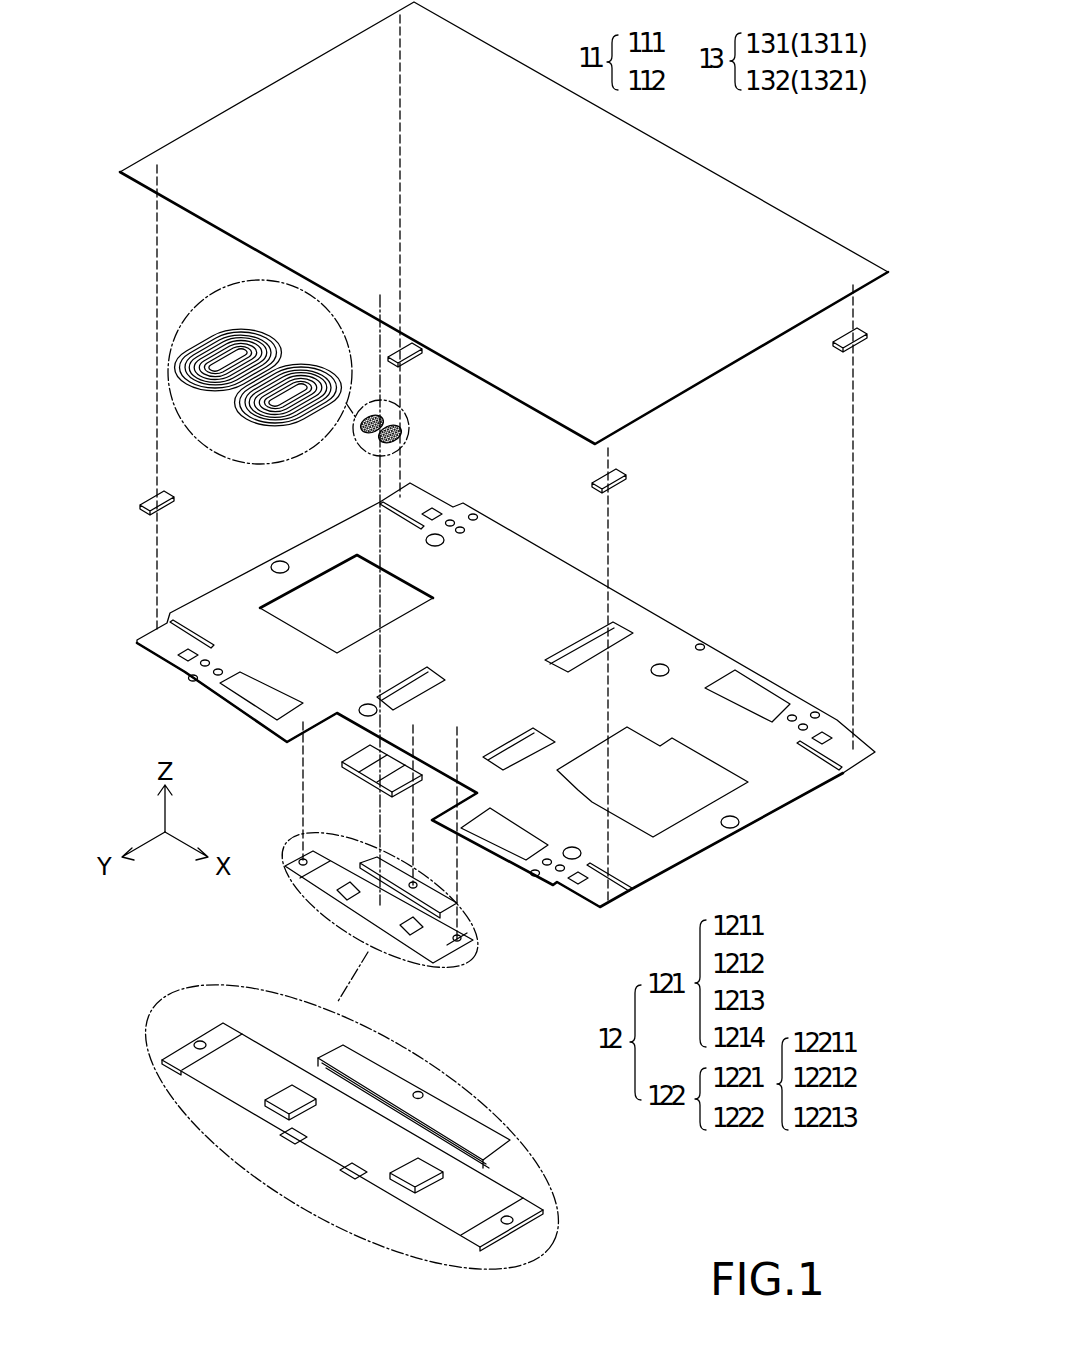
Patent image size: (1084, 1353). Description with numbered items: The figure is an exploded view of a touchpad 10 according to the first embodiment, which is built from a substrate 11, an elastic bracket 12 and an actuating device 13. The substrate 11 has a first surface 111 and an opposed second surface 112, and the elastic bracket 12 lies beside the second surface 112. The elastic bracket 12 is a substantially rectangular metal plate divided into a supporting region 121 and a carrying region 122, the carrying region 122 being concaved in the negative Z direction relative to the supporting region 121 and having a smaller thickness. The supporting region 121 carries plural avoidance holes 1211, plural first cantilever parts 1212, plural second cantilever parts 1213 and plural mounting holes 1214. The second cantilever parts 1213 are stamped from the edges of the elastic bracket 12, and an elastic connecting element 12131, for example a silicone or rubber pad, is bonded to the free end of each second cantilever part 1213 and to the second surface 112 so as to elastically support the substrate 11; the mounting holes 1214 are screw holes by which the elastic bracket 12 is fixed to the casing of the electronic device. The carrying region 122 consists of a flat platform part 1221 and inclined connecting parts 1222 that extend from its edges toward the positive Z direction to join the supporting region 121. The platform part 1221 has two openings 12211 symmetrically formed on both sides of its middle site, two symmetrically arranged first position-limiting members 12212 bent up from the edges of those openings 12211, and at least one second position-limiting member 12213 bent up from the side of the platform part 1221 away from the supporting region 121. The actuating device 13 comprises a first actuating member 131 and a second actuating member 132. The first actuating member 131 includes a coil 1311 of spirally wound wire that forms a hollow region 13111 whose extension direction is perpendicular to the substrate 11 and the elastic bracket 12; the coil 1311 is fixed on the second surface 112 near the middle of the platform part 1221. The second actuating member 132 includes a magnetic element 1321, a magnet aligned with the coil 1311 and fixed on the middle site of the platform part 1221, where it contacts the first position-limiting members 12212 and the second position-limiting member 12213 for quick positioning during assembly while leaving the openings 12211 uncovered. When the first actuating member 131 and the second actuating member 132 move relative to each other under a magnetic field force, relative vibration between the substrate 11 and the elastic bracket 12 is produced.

The touchpad 10 is at (248, 26).
The substrate 11 is at (504, 223).
The first surface 111 is at (763, 222).
The second surface 112 is at (693, 393).
The elastic bracket 12 is at (500, 815).
The supporting region 121 is at (505, 633).
The avoidance holes 1211 is at (740, 692).
The first cantilever parts 1212 is at (577, 653).
The second cantilever parts 1213 is at (415, 505).
The mounting holes 1214 is at (278, 560).
The elastic connecting element 12131 is at (143, 508).
The carrying region 122 is at (308, 888).
The platform part 1221 is at (309, 1130).
The openings 12211 is at (290, 1092).
The first position-limiting members 12212 is at (425, 1080).
The second position-limiting member 12213 is at (290, 1137).
The connecting parts 1222 is at (180, 1055).
The actuating device 13 is at (317, 536).
The first actuating member 131 is at (395, 422).
The coil 1311 is at (260, 376).
The hollow region 13111 is at (230, 345).
The second actuating member 132 is at (362, 787).
The magnetic element 1321 is at (362, 760).